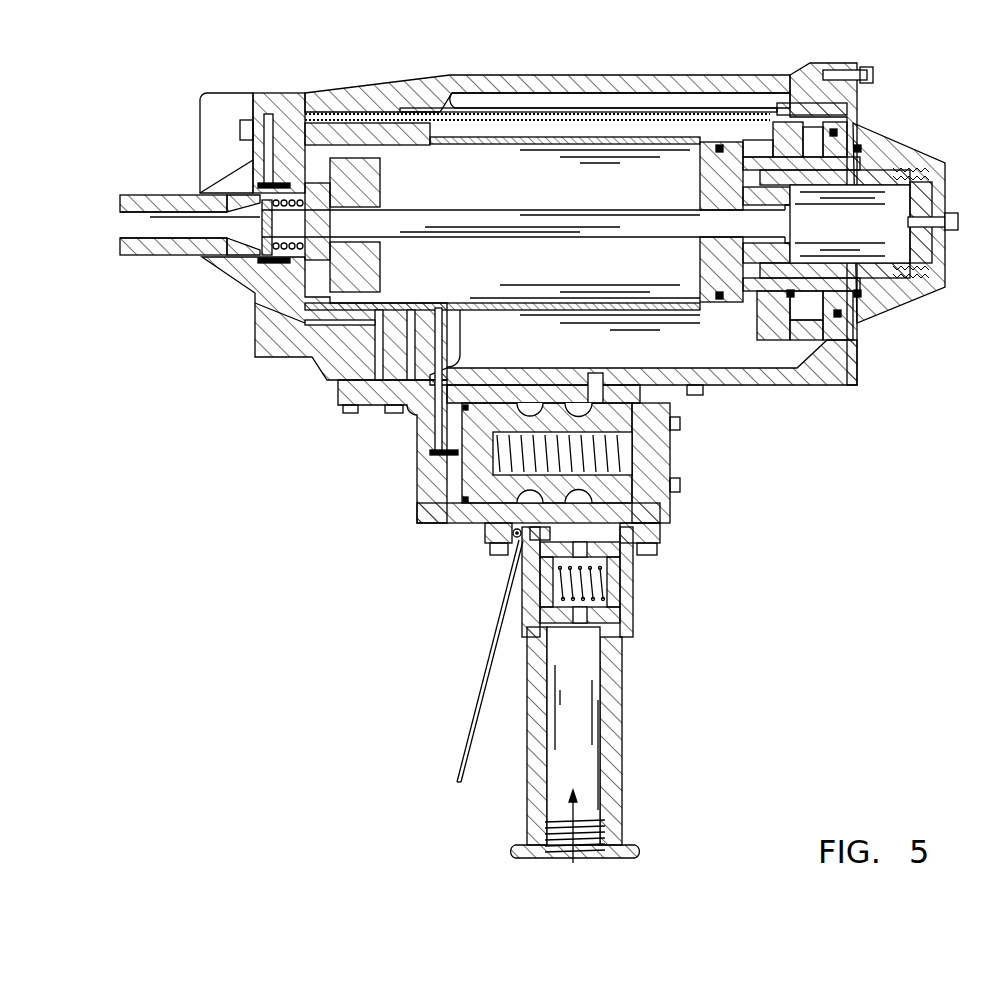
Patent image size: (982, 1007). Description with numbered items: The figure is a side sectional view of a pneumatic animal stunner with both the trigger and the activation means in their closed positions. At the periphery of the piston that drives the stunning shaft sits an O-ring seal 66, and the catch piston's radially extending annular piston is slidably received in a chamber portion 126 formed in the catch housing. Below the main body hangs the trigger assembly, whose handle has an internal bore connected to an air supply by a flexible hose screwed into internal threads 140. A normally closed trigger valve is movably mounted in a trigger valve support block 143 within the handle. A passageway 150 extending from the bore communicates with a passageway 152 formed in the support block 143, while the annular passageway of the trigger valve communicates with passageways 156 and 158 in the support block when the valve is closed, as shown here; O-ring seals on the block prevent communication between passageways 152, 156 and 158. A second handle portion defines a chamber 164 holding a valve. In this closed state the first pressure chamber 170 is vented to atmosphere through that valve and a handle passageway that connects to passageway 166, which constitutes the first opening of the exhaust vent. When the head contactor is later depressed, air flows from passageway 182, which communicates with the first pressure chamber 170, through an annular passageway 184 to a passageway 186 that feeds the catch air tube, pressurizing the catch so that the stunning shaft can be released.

The O-ring seal 66 is at (720, 140).
The chamber portion 126 is at (815, 137).
The internal threads 140 is at (607, 833).
The trigger valve support block 143 is at (620, 548).
The passageway 150 is at (597, 637).
The passageway 152 is at (620, 618).
The passageway 156 is at (560, 612).
The passageway 158 is at (540, 547).
The chamber 164 is at (647, 492).
The passageway 166 is at (518, 518).
The first pressure chamber 170 is at (538, 105).
The passageway 182 is at (320, 92).
The annular passageway 184 is at (182, 195).
The passageway 186 is at (262, 92).